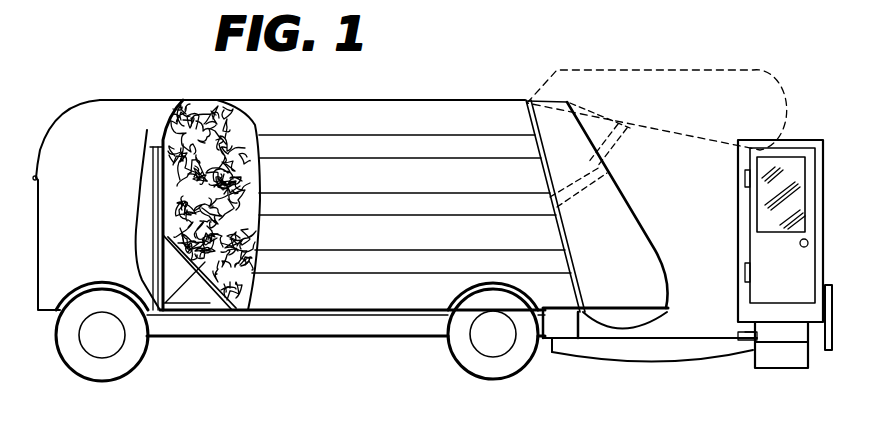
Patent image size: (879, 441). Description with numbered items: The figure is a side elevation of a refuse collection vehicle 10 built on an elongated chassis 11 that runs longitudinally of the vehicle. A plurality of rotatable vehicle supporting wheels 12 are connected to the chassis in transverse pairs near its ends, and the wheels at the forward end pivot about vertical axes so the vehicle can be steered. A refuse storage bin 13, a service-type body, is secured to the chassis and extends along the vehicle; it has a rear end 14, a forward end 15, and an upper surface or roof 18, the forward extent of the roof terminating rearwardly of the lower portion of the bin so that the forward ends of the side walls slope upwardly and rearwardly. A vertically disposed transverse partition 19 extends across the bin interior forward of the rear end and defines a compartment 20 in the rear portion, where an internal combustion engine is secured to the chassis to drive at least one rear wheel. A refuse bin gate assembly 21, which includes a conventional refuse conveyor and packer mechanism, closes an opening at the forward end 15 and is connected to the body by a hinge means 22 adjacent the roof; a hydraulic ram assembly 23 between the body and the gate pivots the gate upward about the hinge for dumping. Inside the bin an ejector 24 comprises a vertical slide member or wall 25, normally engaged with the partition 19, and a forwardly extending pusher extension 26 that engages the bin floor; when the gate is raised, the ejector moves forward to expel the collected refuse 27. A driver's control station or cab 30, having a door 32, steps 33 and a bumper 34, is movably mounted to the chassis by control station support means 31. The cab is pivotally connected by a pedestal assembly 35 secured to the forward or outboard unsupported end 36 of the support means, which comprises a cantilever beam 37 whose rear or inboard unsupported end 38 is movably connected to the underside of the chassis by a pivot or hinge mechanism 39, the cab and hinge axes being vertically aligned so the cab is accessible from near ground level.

The refuse collection vehicle 10 is at (440, 85).
The chassis 11 is at (260, 322).
The vehicle supporting wheels 12 is at (128, 357).
The refuse storage bin 13 is at (313, 107).
The rear end 14 is at (37, 177).
The forward end 15 is at (540, 243).
The upper surface or roof 18 is at (407, 100).
The transverse partition 19 is at (147, 200).
The compartment 20 is at (143, 243).
The refuse bin gate assembly 21 is at (630, 230).
The hinge means 22 is at (527, 100).
The hydraulic ram assembly 23 is at (613, 150).
The ejector 24 is at (175, 125).
The vertical slide member or wall 25 is at (160, 165).
The pusher extension 26 is at (207, 307).
The refuse 27 is at (220, 128).
The driver's control station or cab 30 is at (800, 130).
The control station support means 31 is at (676, 358).
The door 32 is at (777, 238).
The steps 33 is at (787, 357).
The bumper 34 is at (828, 353).
The pedestal assembly 35 is at (743, 327).
The forward or outboard unsupported end 36 is at (750, 348).
The cantilever beam 37 is at (632, 348).
The rear or inboard unsupported end 38 is at (567, 347).
The pivot or hinge mechanism 39 is at (557, 327).